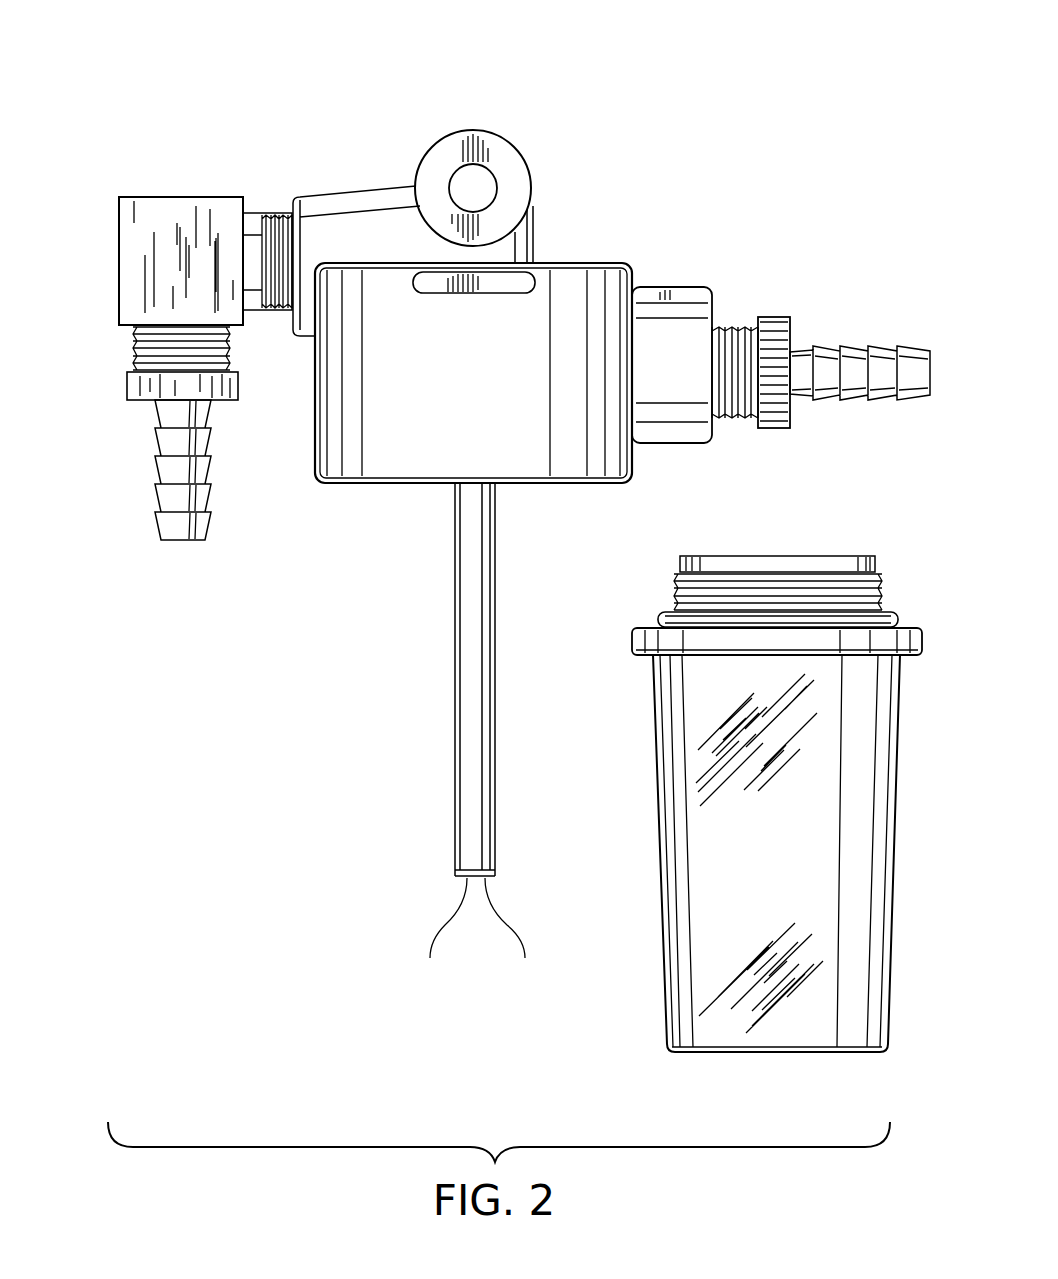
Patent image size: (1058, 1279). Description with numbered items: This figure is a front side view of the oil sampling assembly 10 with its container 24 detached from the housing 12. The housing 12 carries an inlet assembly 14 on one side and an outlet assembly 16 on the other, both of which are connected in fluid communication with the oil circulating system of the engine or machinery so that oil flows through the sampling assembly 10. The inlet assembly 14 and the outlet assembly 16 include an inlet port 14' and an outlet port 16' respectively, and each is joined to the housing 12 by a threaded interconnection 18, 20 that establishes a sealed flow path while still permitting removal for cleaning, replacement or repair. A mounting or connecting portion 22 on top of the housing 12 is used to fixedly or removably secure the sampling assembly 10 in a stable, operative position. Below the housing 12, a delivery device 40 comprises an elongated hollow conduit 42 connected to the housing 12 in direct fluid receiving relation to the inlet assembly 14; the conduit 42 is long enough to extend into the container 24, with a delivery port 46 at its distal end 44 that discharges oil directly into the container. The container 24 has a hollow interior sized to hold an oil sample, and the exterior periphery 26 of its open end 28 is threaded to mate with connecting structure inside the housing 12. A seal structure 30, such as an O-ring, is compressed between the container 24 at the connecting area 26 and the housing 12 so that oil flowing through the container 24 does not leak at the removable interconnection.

The oil sampling assembly 10 is at (712, 88).
The housing 12 is at (584, 233).
The inlet assembly 14 is at (164, 236).
The inlet port 14' is at (133, 473).
The outlet assembly 16 is at (823, 314).
The outlet port 16' is at (868, 320).
The threaded interconnection 18 is at (269, 200).
The threaded interconnection 20 is at (739, 290).
The mounting portion 22 is at (502, 108).
The container 24 is at (712, 773).
The exterior periphery 26 is at (801, 530).
The open end 28 is at (775, 555).
The seal structure 30 is at (665, 614).
The delivery device 40 is at (408, 736).
The elongated conduit 42 is at (470, 597).
The distal end 44 is at (512, 934).
The delivery port 46 is at (443, 934).